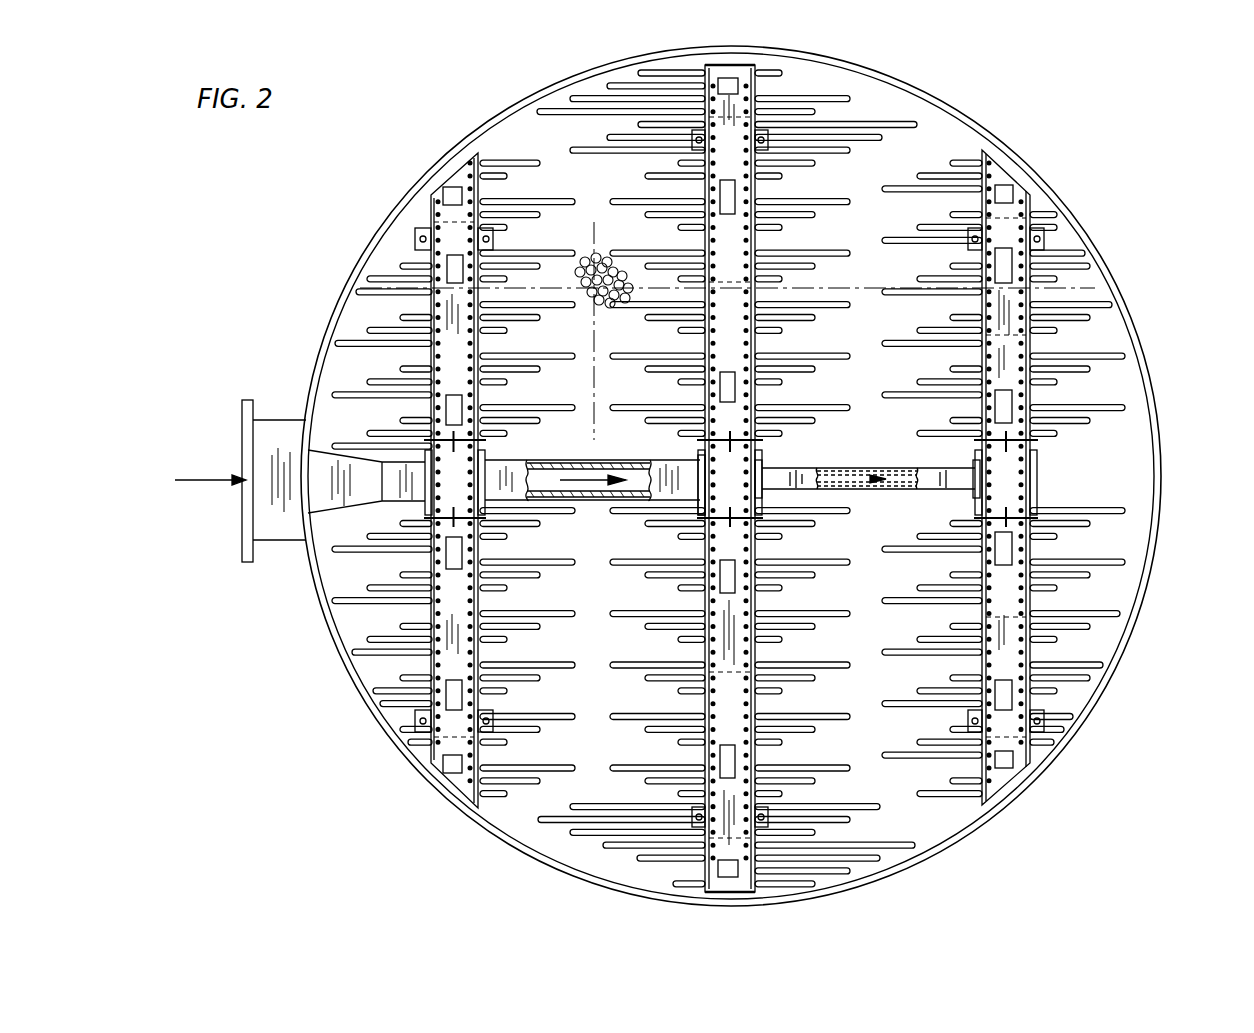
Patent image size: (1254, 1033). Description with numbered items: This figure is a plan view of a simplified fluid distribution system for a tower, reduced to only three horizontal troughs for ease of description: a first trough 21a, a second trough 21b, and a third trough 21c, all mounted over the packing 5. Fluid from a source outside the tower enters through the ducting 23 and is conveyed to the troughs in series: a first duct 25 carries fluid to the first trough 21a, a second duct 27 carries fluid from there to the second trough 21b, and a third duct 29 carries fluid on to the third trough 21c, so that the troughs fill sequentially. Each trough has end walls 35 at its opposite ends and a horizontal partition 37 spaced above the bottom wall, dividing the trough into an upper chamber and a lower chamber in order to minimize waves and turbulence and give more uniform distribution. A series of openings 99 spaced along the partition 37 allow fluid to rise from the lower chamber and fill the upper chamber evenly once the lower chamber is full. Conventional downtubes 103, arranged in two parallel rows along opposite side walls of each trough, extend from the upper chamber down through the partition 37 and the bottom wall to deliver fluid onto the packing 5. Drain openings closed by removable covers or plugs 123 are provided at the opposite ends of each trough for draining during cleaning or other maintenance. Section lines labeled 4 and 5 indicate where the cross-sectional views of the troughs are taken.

The first trough 21a is at (433, 186).
The second trough 21b is at (764, 84).
The third trough 21c is at (1042, 262).
The ducting 23 is at (340, 514).
The first duct 25 is at (323, 458).
The second duct 27 is at (600, 505).
The third duct 29 is at (866, 489).
The end wall 35 is at (757, 68).
The horizontal partition 37 is at (440, 236).
The openings 99 is at (455, 400).
The downtubes 103 is at (515, 160).
The removable covers or plugs 123 is at (727, 86).
The section line 4- 4 is at (862, 160).
The packing 5 is at (1098, 575).